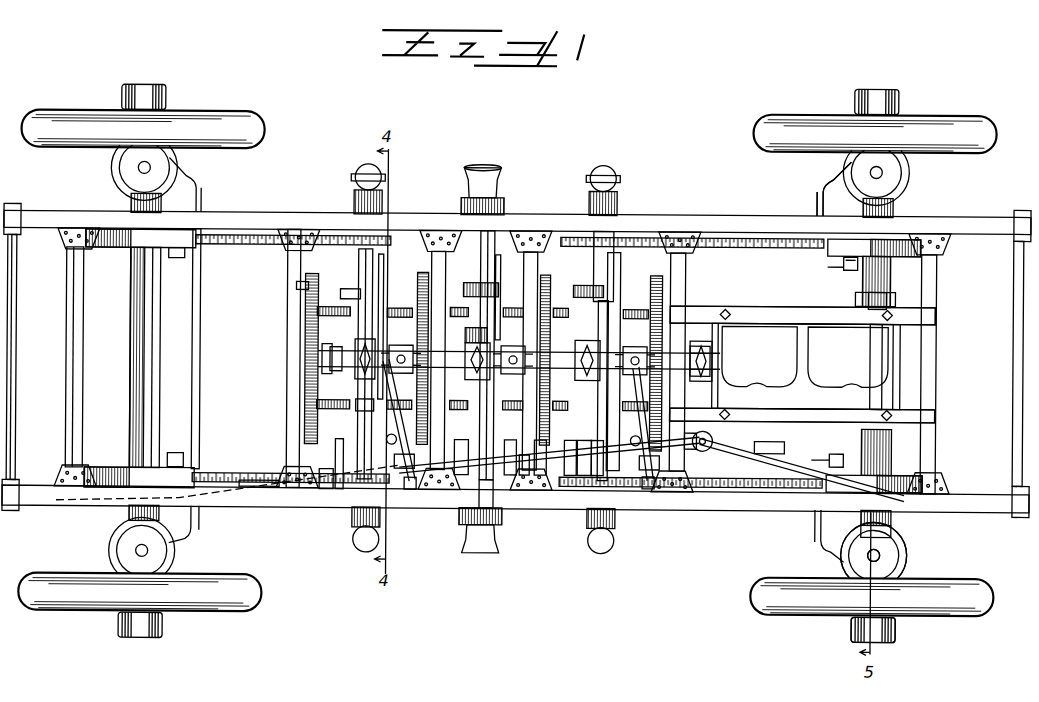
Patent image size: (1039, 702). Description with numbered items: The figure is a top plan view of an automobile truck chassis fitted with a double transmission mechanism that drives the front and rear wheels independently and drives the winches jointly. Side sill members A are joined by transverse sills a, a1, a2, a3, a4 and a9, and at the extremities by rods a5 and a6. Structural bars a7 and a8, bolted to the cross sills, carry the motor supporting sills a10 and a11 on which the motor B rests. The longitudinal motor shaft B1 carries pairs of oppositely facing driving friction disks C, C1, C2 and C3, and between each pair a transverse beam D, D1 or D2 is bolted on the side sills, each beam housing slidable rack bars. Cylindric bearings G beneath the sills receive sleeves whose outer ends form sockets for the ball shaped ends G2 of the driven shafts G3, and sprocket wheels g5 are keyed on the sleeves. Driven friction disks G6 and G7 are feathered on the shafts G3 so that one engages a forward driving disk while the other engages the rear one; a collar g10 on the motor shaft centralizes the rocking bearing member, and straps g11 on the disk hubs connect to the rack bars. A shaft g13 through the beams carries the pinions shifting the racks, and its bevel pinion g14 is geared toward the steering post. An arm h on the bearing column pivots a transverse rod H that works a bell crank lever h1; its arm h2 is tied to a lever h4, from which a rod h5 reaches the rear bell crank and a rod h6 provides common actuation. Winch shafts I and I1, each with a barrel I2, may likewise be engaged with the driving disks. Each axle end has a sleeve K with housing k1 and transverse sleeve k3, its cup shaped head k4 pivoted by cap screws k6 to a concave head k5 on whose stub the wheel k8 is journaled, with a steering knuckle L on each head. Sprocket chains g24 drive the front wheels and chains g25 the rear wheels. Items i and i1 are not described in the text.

The side sill A is at (727, 226).
The transverse sill a is at (932, 330).
The transverse sill a1 is at (722, 470).
The transverse sill a2 is at (540, 512).
The transverse sill a3 is at (462, 516).
The transverse sill a4 is at (258, 508).
The end rod a5 is at (1018, 333).
The end rod a6 is at (12, 422).
The structural bar a7 is at (769, 322).
The structural bar a8 is at (775, 447).
The transverse sill a9 is at (98, 390).
The motor supporting sill a10 is at (898, 418).
The motor supporting sill a11 is at (735, 410).
The motor B is at (878, 362).
The motor shaft B1 is at (705, 352).
The driving friction disk C is at (640, 285).
The driving friction disk C1 is at (552, 276).
The driving friction disk C2 is at (420, 278).
The driving friction disk C3 is at (345, 282).
The transverse beam D is at (592, 505).
The transverse beam D1 is at (515, 512).
The transverse beam D2 is at (326, 505).
The cylindric bearing G is at (338, 520).
The ball shaped end G2 is at (365, 276).
The driven shaft G3 is at (318, 298).
The driven friction disk G6 is at (333, 398).
The driven friction disk G7 is at (482, 256).
The sprocket wheel g5 is at (305, 286).
The collar g10 is at (338, 362).
The strap g11 is at (423, 283).
The pinion shaft g13 is at (360, 410).
The bevel pinion g14 is at (696, 434).
The sprocket chain g24 is at (770, 240).
The sprocket chain g25 is at (245, 236).
The rod H is at (600, 352).
The arm h is at (408, 312).
The bell crank lever h1 is at (688, 505).
The bell crank arm h2 is at (650, 505).
The lever h4 is at (712, 440).
The rod h5 is at (571, 512).
The rod h6 is at (598, 512).
The winch shaft I is at (489, 256).
The winch shaft I1 is at (522, 505).
The barrel I2 is at (480, 512).
The bracket i is at (862, 290).
The post i1 is at (200, 336).
The sleeve K is at (905, 540).
The housing k1 is at (888, 298).
The transverse sleeve k3 is at (886, 447).
The cup shaped head k4 is at (905, 553).
The concave head k5 is at (903, 575).
The cap screw k6 is at (866, 560).
The automobile wheel k8 is at (878, 618).
The steering knuckle L is at (195, 178).